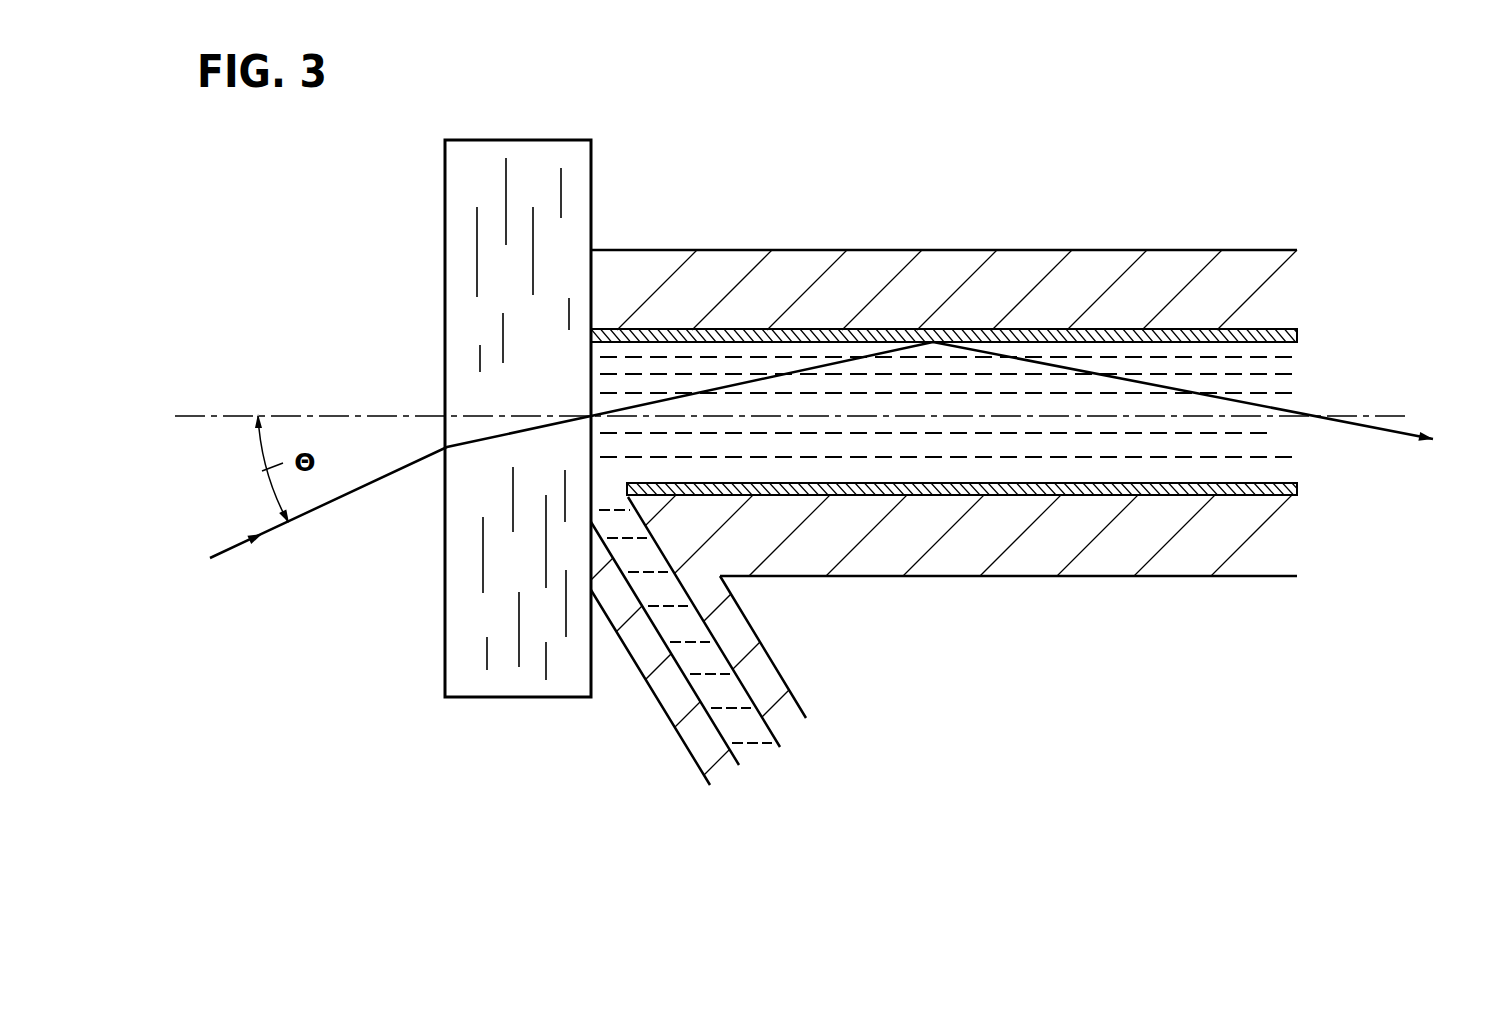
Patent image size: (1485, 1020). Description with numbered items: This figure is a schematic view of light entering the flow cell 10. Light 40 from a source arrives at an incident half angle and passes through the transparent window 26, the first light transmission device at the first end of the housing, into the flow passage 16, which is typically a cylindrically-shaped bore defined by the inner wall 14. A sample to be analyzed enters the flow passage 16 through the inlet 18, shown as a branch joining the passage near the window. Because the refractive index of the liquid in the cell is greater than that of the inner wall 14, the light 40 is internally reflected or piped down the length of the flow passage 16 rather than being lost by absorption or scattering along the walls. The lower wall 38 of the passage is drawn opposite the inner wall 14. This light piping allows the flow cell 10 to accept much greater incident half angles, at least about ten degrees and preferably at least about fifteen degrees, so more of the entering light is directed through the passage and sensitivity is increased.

The flow cell 10 is at (1066, 224).
The inner wall 14 is at (1178, 333).
The flow passage 16 is at (966, 427).
The inlet 18 is at (648, 708).
The transparent window 26 is at (445, 230).
The lower reflective layer 38 is at (1152, 489).
The light 40 is at (753, 380).